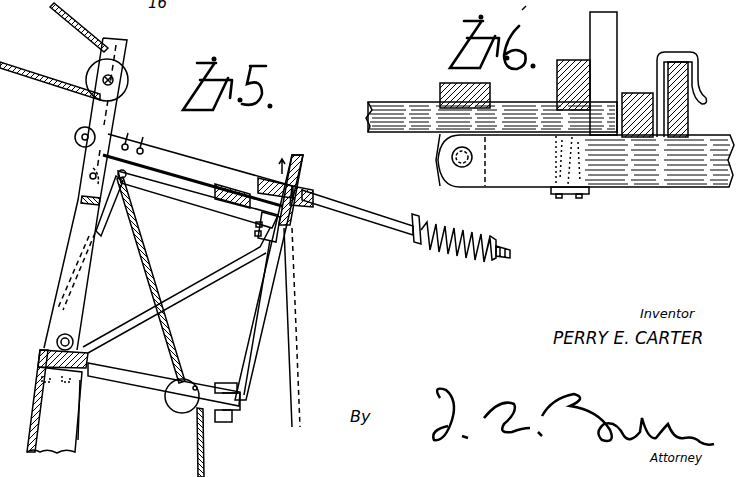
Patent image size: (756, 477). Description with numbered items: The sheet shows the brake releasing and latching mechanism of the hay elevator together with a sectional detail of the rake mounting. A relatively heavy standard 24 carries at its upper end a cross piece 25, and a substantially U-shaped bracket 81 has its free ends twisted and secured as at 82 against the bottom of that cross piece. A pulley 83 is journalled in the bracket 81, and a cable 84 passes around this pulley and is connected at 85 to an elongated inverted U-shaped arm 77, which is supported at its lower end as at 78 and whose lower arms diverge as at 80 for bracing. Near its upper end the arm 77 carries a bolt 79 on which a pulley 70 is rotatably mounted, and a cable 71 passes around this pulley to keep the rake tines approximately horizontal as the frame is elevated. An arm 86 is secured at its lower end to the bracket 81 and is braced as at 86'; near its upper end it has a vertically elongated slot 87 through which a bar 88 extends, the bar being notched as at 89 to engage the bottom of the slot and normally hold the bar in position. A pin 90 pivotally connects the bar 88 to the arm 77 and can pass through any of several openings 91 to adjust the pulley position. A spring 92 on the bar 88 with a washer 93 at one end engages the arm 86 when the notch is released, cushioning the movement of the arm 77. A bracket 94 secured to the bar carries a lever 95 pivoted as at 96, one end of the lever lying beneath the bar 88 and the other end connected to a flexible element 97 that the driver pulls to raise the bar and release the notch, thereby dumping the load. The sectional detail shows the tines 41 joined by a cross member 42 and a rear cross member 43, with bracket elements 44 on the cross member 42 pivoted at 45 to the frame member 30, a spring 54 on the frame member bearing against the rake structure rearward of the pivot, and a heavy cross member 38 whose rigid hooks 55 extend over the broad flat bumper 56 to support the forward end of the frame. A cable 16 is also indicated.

In FIG. 6, the cable 16 is at (532, 9).
In FIG. 5, the cable 71 is at (88, 42).
In FIG. 5, the pulley 70 is at (130, 86).
In FIG. 5, the bolt 79 is at (114, 76).
In FIG. 5, the inverted U-shaped arm 77 is at (78, 223).
In FIG. 5, the diverging lower ends of arm 80 is at (72, 280).
In FIG. 5, the pin 90 is at (98, 138).
In FIG. 5, the openings 91 is at (142, 137).
In FIG. 5, the cable connection 85 is at (90, 178).
In FIG. 5, the bar 88 is at (228, 170).
In FIG. 5, the lever 95 is at (186, 192).
In FIG. 5, the pivot 96 is at (246, 209).
In FIG. 5, the bracket 94 is at (258, 230).
In FIG. 5, the flexible element 97 is at (128, 192).
In FIG. 5, the cable 84 is at (182, 352).
In FIG. 5, the arm support 78 is at (74, 334).
In FIG. 5, the cross piece 25 is at (90, 362).
In FIG. 5, the twisted secured ends of bracket 82 is at (66, 384).
In FIG. 5, the standard 24 is at (80, 404).
In FIG. 5, the U-shaped bracket 81 is at (136, 402).
In FIG. 5, the pulley 83 is at (180, 416).
In FIG. 5, the slot 87 is at (303, 176).
In FIG. 5, the arm 86 is at (281, 317).
In FIG. 5, the brace 86' is at (303, 327).
In FIG. 5, the notch 89 is at (308, 192).
In FIG. 5, the washer 93 is at (412, 244).
In FIG. 5, the spring 92 is at (450, 248).
In FIG. 6, the tines 41 is at (532, 106).
In FIG. 6, the cross member 42 is at (440, 90).
In FIG. 6, the cross member 43 is at (570, 60).
In FIG. 6, the cross member 38 is at (636, 93).
In FIG. 6, the bumper 56 is at (690, 125).
In FIG. 6, the hooks 55 is at (700, 54).
In FIG. 6, the frame member 30 is at (672, 188).
In FIG. 6, the pivot 45 is at (452, 160).
In FIG. 6, the bracket elements 44 is at (430, 140).
In FIG. 6, the springs 54 is at (540, 192).